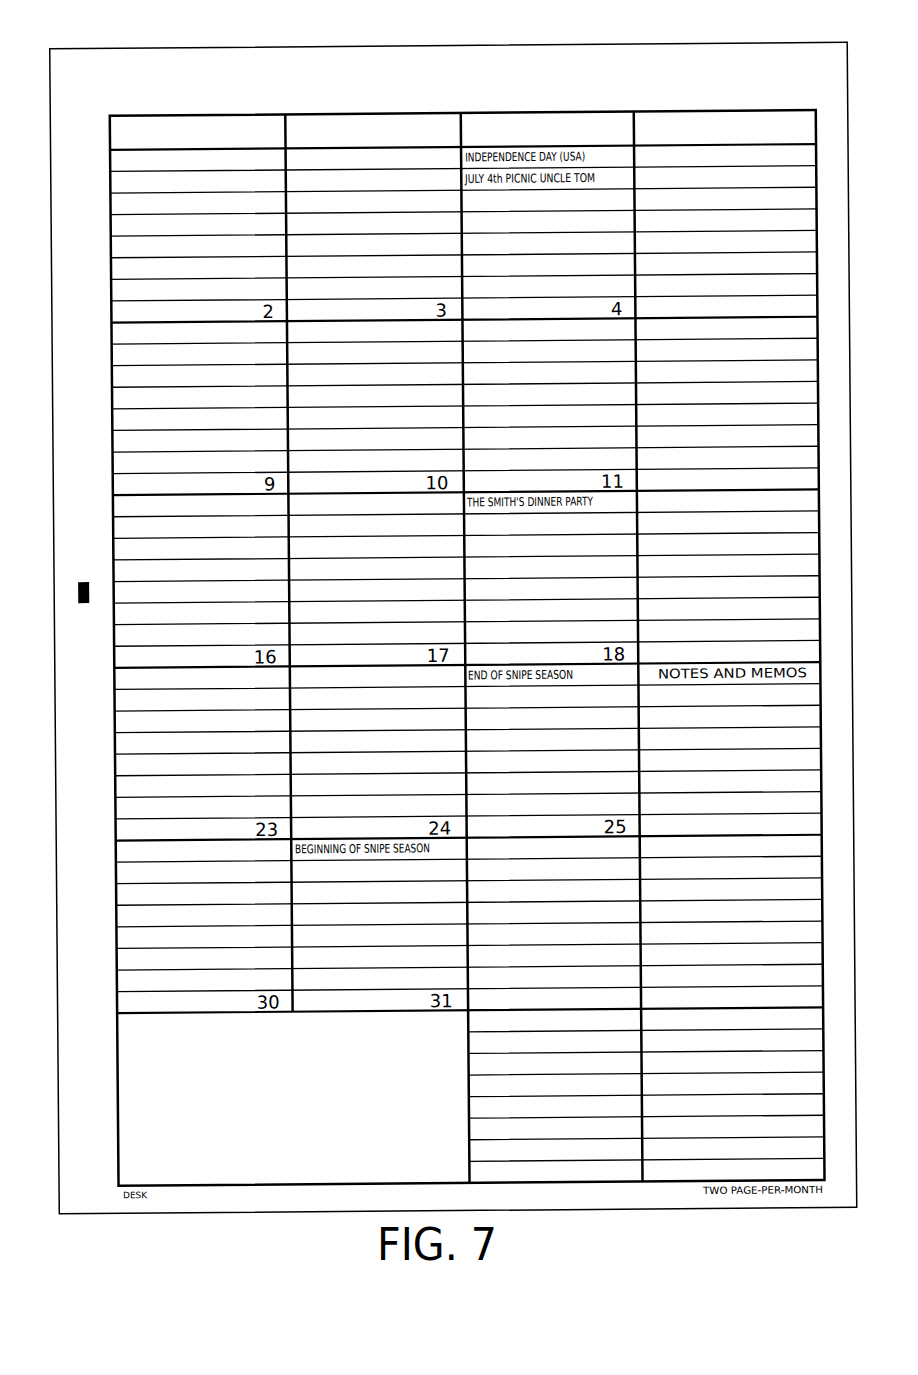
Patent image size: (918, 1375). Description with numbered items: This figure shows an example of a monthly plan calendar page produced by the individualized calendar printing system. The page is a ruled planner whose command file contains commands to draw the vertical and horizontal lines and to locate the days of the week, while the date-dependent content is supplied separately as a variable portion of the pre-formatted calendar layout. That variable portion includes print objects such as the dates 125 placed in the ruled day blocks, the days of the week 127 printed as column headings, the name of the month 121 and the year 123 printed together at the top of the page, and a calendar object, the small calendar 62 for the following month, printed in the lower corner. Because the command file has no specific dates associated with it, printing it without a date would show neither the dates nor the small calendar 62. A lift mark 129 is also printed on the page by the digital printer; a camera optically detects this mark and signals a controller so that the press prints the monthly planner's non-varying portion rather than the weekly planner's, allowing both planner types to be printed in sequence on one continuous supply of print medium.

The days of the week 127 is at (202, 126).
The name of the month 121 is at (716, 56).
The year indicator 123 is at (798, 57).
The dates 125 is at (263, 311).
The lift mark 129 is at (84, 601).
The small calendar 62 is at (141, 1152).